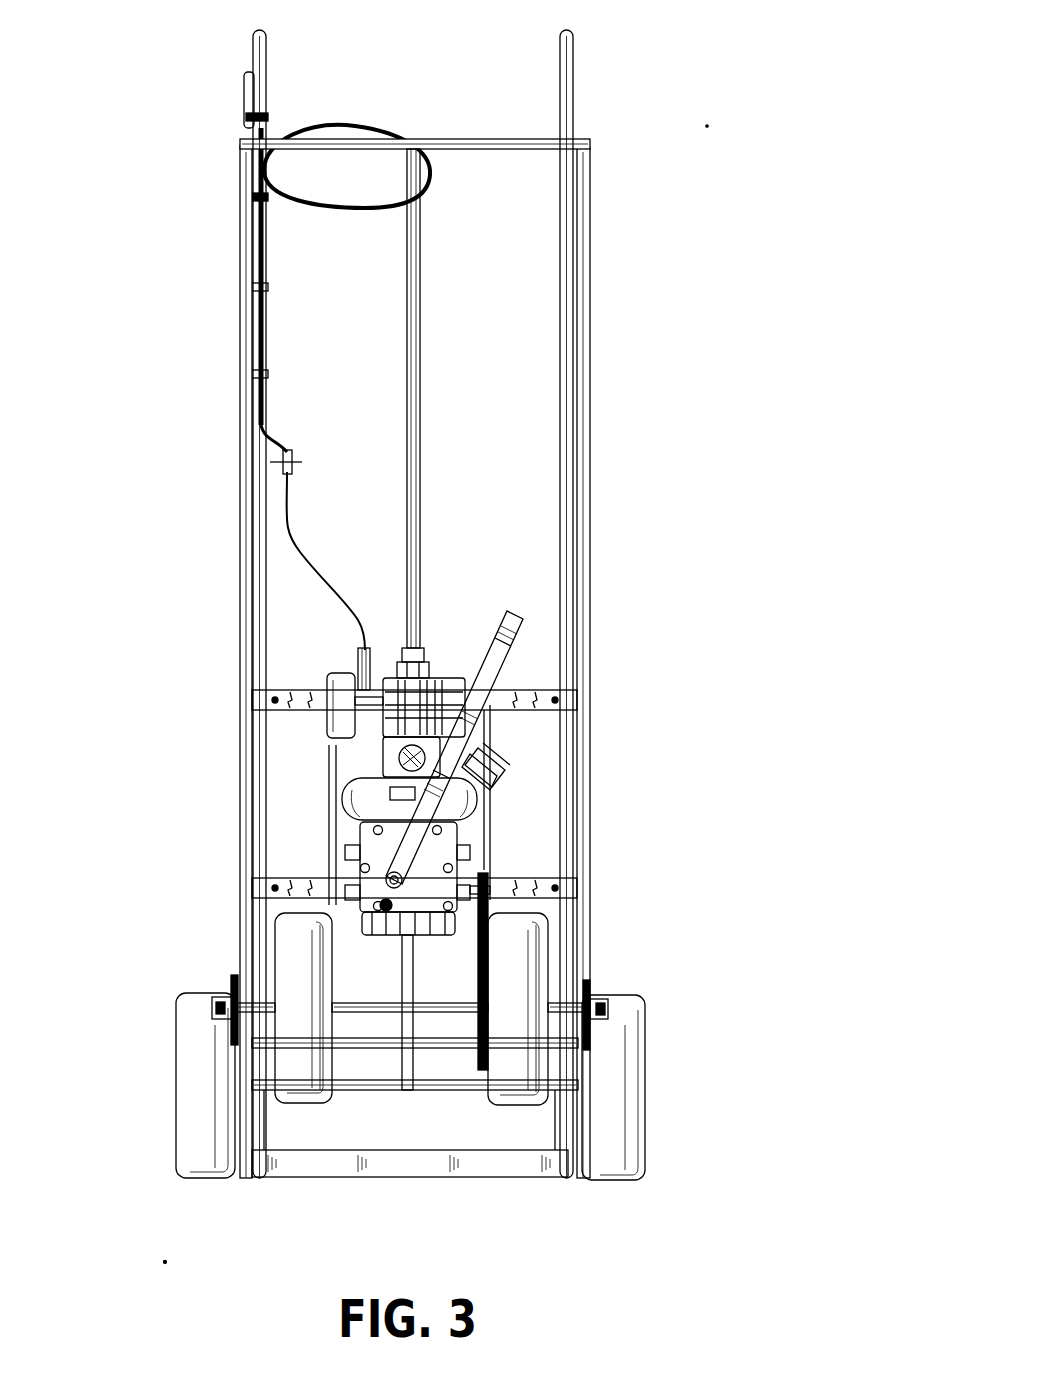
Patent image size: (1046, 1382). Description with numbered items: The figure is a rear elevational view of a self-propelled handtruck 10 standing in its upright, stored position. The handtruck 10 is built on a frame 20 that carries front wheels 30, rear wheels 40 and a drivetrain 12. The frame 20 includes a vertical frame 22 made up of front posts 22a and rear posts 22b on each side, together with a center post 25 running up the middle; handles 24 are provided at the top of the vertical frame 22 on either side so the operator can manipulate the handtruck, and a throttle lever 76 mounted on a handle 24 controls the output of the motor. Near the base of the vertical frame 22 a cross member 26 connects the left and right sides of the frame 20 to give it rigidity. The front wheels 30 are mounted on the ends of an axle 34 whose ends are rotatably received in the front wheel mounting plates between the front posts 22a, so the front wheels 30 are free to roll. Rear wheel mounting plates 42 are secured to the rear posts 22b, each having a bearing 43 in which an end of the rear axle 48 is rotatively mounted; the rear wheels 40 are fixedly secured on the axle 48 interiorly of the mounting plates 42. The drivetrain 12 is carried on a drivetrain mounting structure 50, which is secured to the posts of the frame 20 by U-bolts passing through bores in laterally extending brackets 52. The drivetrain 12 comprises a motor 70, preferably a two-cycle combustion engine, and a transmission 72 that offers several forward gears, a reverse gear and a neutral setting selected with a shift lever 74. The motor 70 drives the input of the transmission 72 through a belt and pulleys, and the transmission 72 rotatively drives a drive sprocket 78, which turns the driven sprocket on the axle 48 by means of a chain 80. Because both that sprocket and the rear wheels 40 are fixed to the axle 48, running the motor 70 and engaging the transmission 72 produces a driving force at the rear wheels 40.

The self-propelled handtruck 10 is at (750, 248).
The drivetrain 12 is at (638, 800).
The frame 20 is at (563, 1222).
The vertical frame 22 is at (652, 500).
The front posts 22a is at (590, 187).
The rear posts 22b is at (575, 345).
The handles 24 is at (258, 32).
The center post 25 is at (421, 377).
The cross member 26 is at (325, 1172).
The front wheels 30 is at (615, 1053).
The axle 34 is at (470, 1100).
The rear wheels 40 is at (535, 987).
The rear wheel mounting plates 42 is at (590, 1000).
The bearing 43 is at (608, 1000).
The axle 48 is at (440, 1020).
The drivetrain mounting structure 50 is at (515, 738).
The brackets 52 is at (535, 695).
The motor 70 is at (450, 680).
The transmission 72 is at (442, 845).
The shift lever 74 is at (520, 622).
The throttle lever 76 is at (245, 80).
The drive sprocket 78 is at (495, 895).
The chain 80 is at (490, 932).